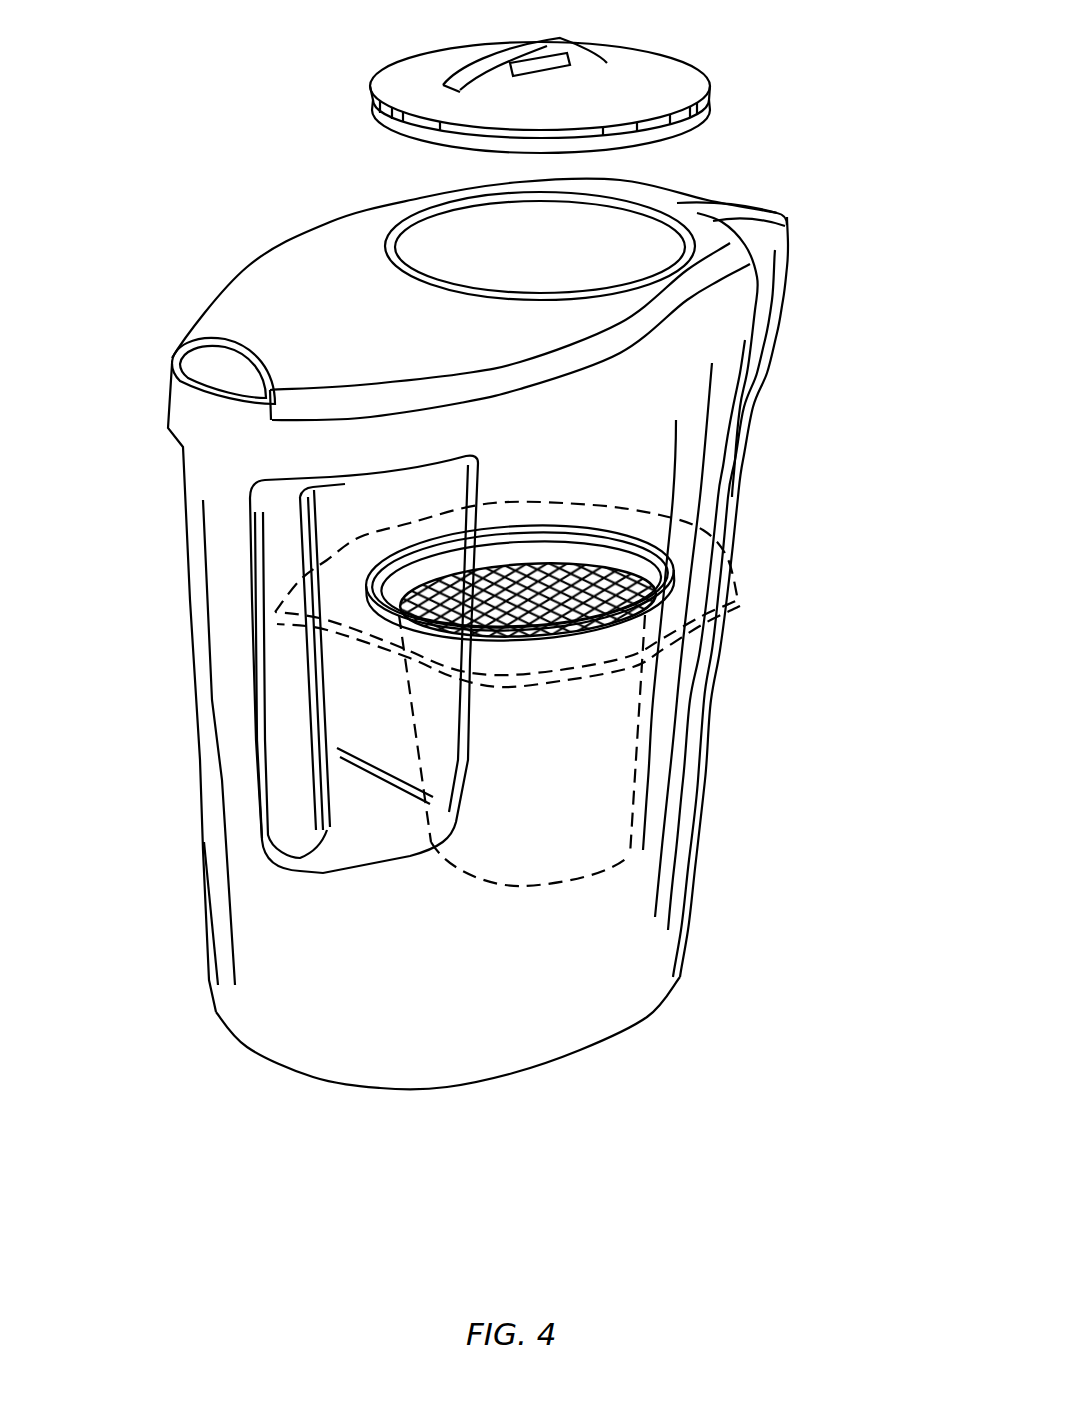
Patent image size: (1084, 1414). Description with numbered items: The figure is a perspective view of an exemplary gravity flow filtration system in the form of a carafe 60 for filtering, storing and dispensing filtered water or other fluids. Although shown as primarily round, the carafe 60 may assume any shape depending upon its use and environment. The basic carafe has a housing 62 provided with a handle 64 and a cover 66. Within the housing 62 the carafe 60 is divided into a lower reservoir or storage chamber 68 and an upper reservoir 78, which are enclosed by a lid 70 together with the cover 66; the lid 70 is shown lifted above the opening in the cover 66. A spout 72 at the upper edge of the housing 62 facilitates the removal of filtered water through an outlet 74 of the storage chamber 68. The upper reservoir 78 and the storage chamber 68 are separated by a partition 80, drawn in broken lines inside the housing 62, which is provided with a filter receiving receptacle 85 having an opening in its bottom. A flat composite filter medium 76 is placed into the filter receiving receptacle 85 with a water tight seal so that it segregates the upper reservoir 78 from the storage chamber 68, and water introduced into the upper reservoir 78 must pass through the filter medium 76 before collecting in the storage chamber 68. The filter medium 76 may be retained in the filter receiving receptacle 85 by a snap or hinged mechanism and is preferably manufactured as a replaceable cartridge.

The carafe 60 is at (190, 128).
The housing 62 is at (738, 503).
The handle 64 is at (223, 618).
The cover 66 is at (278, 292).
The storage chamber 68 is at (448, 1033).
The lid 70 is at (660, 78).
The spout 72 is at (792, 250).
The outlet 74 is at (758, 230).
The filter medium 76 is at (533, 578).
The upper reservoir 78 is at (643, 405).
The partition 80 is at (512, 654).
The filter receiving receptacle 85 is at (660, 558).